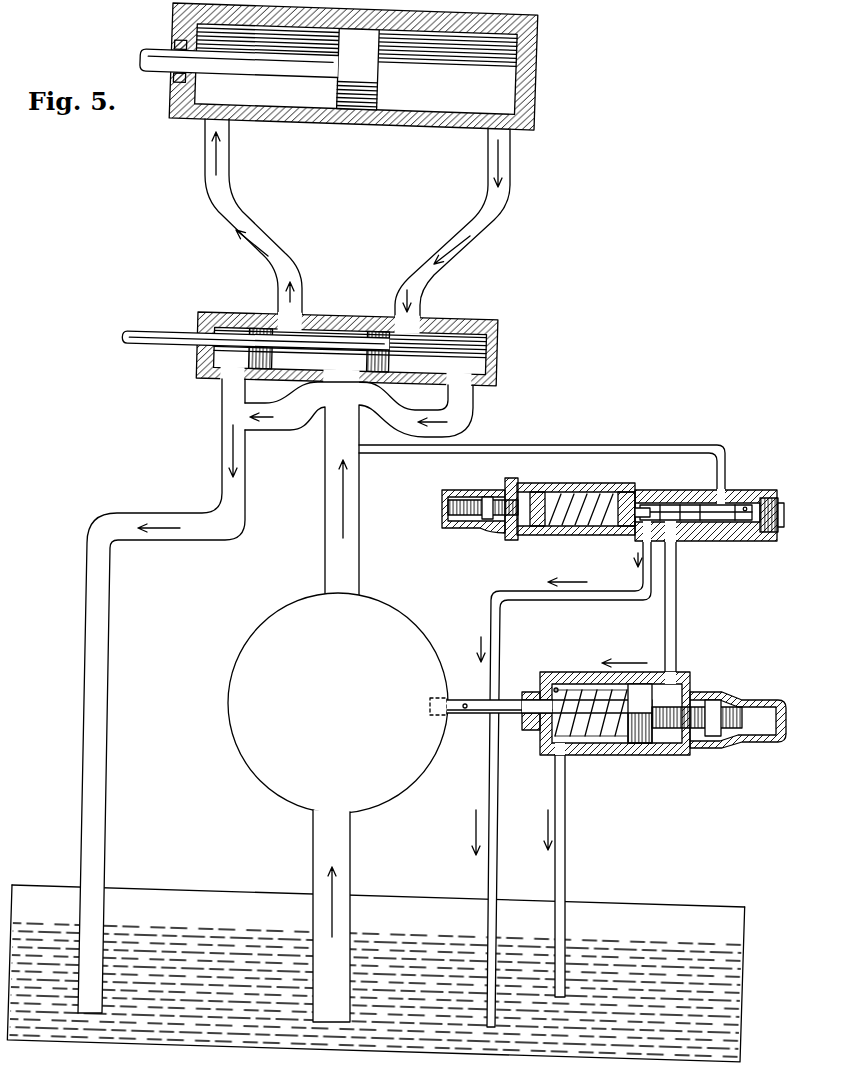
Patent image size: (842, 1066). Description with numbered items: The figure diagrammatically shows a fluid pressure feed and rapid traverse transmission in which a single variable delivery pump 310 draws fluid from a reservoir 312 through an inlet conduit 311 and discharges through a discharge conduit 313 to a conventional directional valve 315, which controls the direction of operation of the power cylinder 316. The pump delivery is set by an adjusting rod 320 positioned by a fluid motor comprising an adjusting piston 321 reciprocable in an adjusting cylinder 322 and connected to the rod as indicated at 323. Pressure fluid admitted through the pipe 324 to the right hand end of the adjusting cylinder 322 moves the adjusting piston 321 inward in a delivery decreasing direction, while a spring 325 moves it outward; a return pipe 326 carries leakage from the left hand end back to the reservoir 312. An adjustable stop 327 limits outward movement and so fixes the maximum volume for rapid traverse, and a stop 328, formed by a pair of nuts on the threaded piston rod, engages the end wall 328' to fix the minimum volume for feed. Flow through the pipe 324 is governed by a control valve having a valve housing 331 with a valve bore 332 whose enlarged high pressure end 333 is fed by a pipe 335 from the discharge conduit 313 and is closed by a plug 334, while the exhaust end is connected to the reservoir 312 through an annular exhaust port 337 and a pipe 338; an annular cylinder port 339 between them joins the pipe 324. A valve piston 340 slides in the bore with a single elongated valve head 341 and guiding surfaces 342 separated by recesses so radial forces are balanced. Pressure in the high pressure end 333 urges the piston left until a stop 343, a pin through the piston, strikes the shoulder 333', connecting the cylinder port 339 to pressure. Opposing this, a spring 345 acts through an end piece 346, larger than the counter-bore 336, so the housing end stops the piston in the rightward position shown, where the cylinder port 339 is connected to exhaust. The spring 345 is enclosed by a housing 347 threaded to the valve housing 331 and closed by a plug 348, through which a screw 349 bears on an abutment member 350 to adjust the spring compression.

The variable delivery pump 310 is at (245, 664).
The inlet conduit 311 is at (340, 848).
The reservoir 312 is at (745, 957).
The discharge conduit 313 is at (352, 583).
The directional valve 315 is at (498, 335).
The power cylinder 316 is at (528, 122).
The adjusting rod 320 is at (453, 717).
The adjusting piston 321 is at (647, 740).
The adjusting cylinder 322 is at (567, 766).
The connection 323 is at (478, 685).
The pipe 324 is at (677, 635).
The spring 325 is at (613, 752).
The return pipe 326 is at (567, 838).
The adjustable stop 327 is at (693, 688).
The adjustable stop 328 is at (591, 686).
The end wall 328' is at (534, 669).
The valve housing 331 is at (729, 492).
The valve bore 332 is at (732, 501).
The enlarged end 333 is at (735, 550).
The shoulder 333' is at (702, 555).
The plug 334 is at (785, 528).
The pipe 335 is at (662, 451).
The counter-bore 336 is at (643, 506).
The annular exhaust port 337 is at (661, 501).
The pipe 338 is at (641, 598).
The annular cylinder port 339 is at (693, 500).
The valve piston 340 is at (668, 541).
The valve head 341 is at (692, 526).
The guiding surfaces 342 is at (712, 500).
The stop 343 is at (745, 500).
The spring 345 is at (589, 493).
The end piece 346 is at (608, 531).
The housing 347 is at (577, 534).
The plug 348 is at (507, 541).
The screw 349 is at (459, 519).
The abutment member 350 is at (543, 491).